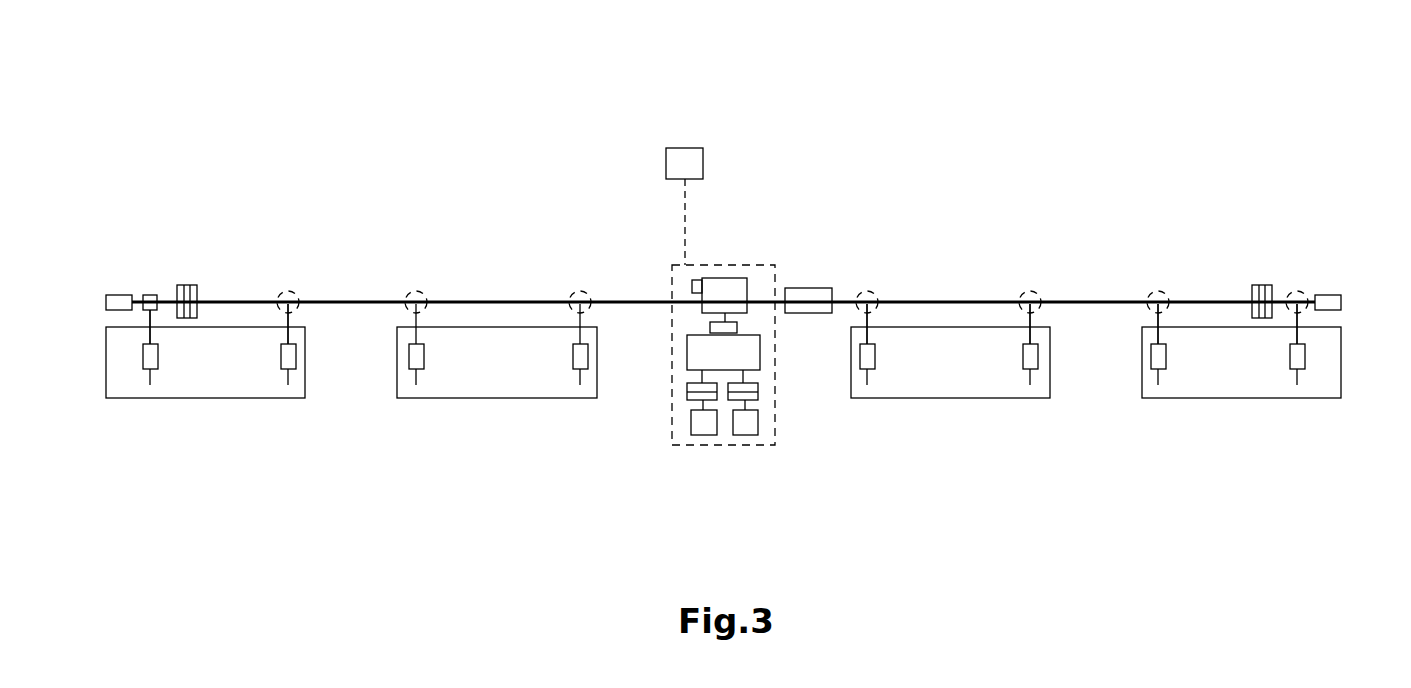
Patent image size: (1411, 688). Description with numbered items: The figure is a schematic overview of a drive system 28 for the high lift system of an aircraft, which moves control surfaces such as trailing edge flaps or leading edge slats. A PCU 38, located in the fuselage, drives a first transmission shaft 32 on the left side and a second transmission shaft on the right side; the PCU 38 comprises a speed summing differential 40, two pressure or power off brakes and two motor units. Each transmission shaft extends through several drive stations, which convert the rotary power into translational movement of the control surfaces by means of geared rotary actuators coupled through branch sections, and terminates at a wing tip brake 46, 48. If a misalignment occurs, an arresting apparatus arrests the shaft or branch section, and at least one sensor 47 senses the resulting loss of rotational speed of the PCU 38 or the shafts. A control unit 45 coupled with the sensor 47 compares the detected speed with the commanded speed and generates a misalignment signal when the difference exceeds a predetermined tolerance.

The drive system 28 is at (990, 128).
The first transmission shaft 32 is at (355, 302).
The PCU 38 is at (758, 277).
The speed summing differential 40 is at (743, 348).
The control unit 45 is at (685, 155).
The wing tip brake 46 is at (120, 297).
The sensor 47 is at (697, 280).
The wing tip brake 48 is at (1330, 297).